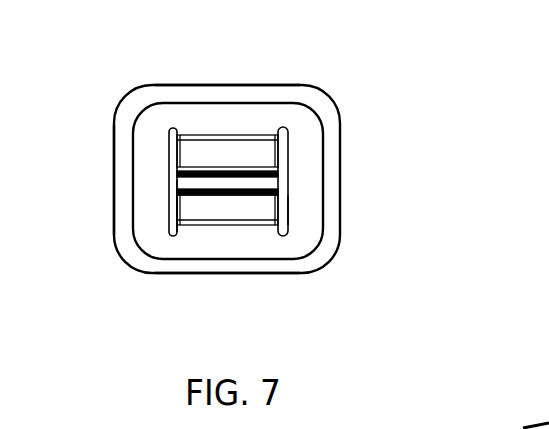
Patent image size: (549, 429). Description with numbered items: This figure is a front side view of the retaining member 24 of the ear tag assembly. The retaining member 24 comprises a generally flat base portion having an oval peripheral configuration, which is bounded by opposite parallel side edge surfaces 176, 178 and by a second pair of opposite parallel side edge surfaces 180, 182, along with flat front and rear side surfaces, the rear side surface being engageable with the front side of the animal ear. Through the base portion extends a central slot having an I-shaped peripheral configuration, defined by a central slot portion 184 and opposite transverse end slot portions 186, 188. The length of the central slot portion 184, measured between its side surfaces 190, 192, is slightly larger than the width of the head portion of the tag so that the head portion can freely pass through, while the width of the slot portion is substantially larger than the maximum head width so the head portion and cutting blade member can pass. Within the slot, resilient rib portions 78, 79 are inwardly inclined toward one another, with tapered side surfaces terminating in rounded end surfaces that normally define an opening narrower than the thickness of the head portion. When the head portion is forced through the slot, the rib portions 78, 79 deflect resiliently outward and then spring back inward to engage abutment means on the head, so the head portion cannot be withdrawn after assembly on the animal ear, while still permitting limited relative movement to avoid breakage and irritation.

The retaining member 24 is at (332, 78).
The side edge surface 176 is at (342, 172).
The side edge surface 178 is at (115, 207).
The side edge surface 180 is at (198, 274).
The side edge surface 182 is at (222, 86).
The central slot portion 184 is at (205, 183).
The transverse end slot portion 186 is at (282, 208).
The transverse end slot portion 188 is at (170, 150).
The side surface 190 is at (288, 162).
The side surface 192 is at (176, 173).
The resilient rib portion 78 is at (244, 158).
The resilient rib portion 79 is at (248, 207).